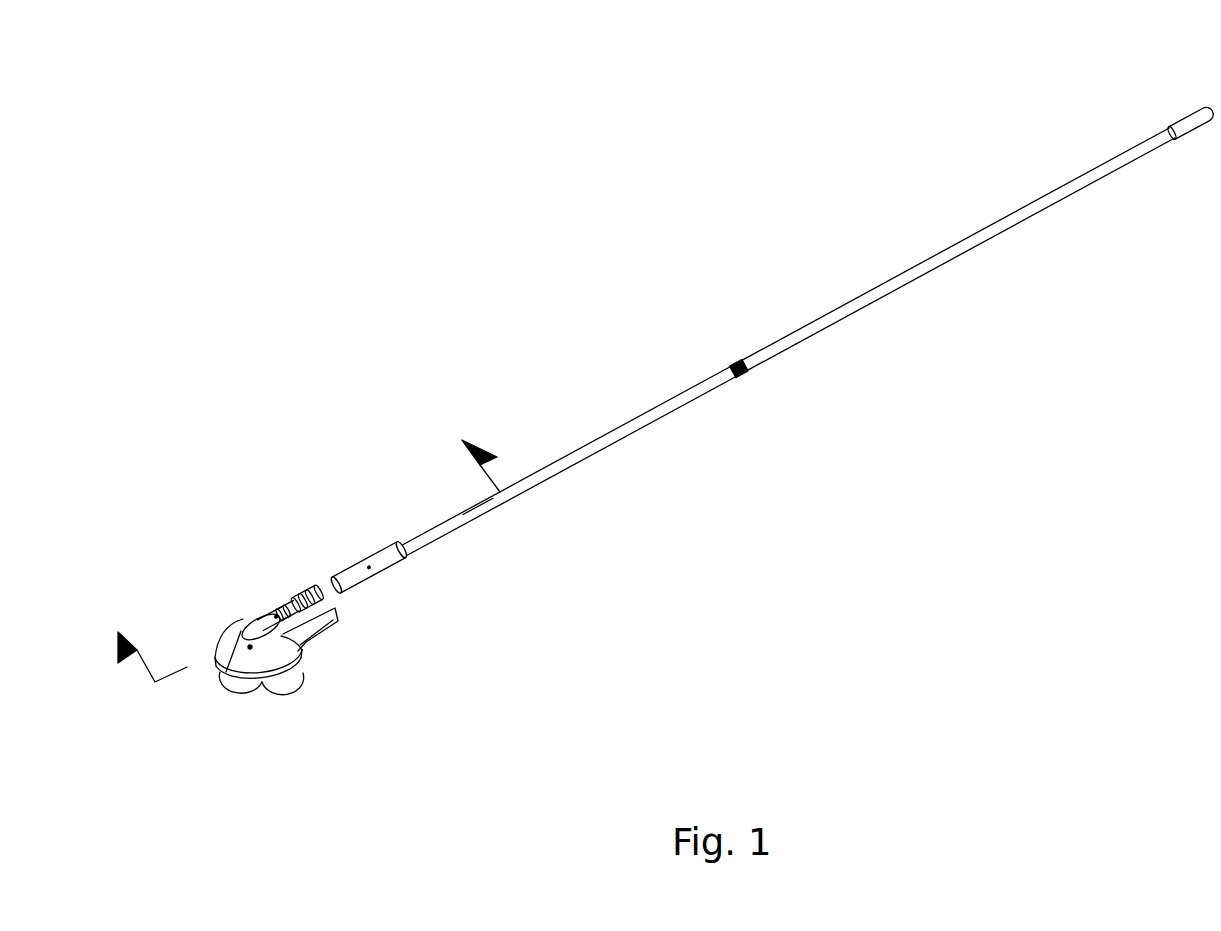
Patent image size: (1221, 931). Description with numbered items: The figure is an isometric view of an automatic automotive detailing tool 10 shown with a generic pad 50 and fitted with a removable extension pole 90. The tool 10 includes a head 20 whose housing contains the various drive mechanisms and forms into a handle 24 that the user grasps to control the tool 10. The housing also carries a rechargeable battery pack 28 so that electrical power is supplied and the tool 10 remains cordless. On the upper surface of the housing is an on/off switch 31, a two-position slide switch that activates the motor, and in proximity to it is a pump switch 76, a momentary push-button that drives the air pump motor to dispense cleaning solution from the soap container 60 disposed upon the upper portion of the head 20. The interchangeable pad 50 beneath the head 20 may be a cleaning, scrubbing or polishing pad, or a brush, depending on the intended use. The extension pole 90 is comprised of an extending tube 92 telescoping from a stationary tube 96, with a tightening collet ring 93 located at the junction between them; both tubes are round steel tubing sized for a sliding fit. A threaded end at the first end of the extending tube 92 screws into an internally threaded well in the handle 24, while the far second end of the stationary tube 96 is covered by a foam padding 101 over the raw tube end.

The automatic automotive detailing tool 10 is at (436, 220).
The head 20 is at (217, 640).
The handle 24 is at (380, 550).
The rechargeable battery pack 28 is at (317, 630).
The on/off switch 31 is at (282, 612).
The pad 50 is at (290, 690).
The soap container 60 is at (320, 587).
The pump switch 76 is at (287, 605).
The extension pole 90 is at (1076, 195).
The extending tube 92 is at (653, 408).
The tightening collet ring 93 is at (745, 372).
The stationary tube 96 is at (940, 252).
The padding 101 is at (1188, 120).